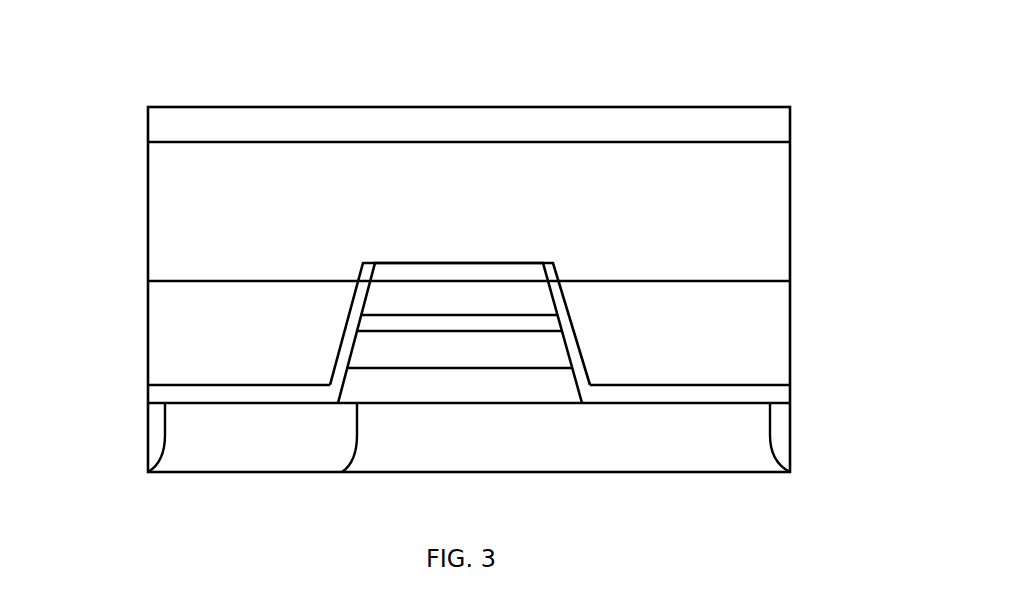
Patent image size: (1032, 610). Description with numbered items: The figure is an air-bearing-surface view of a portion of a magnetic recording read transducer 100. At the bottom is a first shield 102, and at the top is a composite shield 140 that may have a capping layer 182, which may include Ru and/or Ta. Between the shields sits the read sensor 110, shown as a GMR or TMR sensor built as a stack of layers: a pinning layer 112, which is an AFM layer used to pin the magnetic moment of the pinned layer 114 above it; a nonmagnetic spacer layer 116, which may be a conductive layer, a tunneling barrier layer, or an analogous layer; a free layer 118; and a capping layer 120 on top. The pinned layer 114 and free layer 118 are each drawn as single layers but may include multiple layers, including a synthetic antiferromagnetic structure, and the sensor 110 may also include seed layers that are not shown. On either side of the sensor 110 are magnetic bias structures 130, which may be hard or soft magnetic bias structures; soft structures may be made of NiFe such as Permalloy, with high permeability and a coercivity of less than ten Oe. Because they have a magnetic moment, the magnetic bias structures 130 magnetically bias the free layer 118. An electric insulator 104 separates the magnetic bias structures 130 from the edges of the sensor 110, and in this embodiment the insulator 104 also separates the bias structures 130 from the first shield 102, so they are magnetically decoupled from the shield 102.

The transducer 100 is at (483, 66).
The first shield 102 is at (390, 472).
The electric insulator 104 is at (148, 472).
The read sensor 110 is at (532, 428).
The pinning layer 112 is at (342, 472).
The pinned layer 114 is at (547, 368).
The nonmagnetic spacer layer 116 is at (566, 322).
The free layer 118 is at (363, 295).
The capping layer 120 is at (513, 261).
The magnetic bias structures 130 is at (147, 350).
The composite shield 140 is at (148, 173).
The capping layer 182 is at (790, 117).